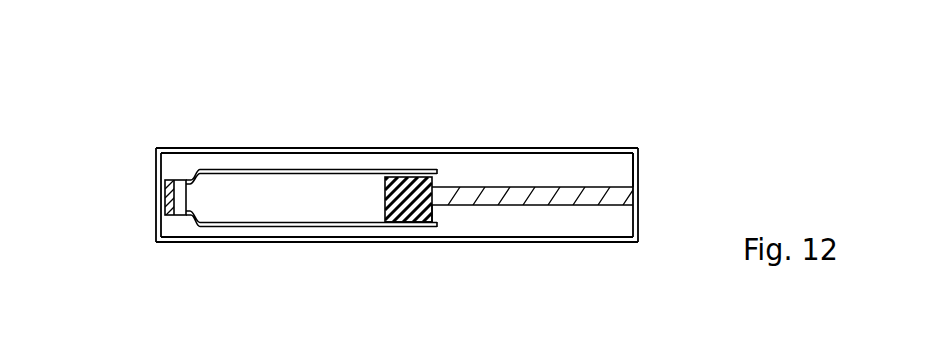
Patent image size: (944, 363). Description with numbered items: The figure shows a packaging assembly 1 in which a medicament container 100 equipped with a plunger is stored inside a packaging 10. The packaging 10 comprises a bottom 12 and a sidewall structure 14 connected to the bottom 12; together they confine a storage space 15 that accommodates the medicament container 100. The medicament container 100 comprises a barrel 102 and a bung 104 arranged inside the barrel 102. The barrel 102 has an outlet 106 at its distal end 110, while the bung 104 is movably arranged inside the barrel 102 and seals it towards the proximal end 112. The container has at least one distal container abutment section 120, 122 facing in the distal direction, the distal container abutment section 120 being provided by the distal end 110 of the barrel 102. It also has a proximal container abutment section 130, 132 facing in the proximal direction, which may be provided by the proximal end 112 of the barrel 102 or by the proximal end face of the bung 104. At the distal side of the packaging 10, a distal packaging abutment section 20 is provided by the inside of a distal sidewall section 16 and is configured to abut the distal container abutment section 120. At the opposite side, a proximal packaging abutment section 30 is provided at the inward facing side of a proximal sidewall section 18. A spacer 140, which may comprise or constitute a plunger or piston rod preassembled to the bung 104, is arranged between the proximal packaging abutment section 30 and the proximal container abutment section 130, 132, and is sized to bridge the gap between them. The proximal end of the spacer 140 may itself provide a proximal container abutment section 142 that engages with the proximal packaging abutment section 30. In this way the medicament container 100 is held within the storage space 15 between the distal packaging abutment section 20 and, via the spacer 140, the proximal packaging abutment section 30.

The packaging assembly 1 is at (493, 85).
The packaging 10 is at (587, 115).
The bottom 12 is at (327, 242).
The sidewall structure 14 is at (138, 153).
The storage space 15 is at (490, 178).
The distal sidewall section 16 is at (161, 218).
The proximal sidewall section 18 is at (638, 168).
The distal packaging abutment section 20 is at (168, 178).
The proximal packaging abutment section 30 is at (633, 162).
The medicament container 100 is at (326, 161).
The barrel 102 is at (265, 170).
The bung 104 is at (393, 177).
The outlet 106 is at (165, 187).
The distal end 110 is at (165, 252).
The proximal end 112 is at (423, 257).
The distal container abutment section 120 is at (165, 205).
The distal container abutment section 122 is at (198, 229).
The proximal container abutment section 130 is at (437, 170).
The proximal container abutment section 132 is at (436, 215).
The spacer 140 is at (522, 190).
The proximal container abutment section 142 is at (638, 193).